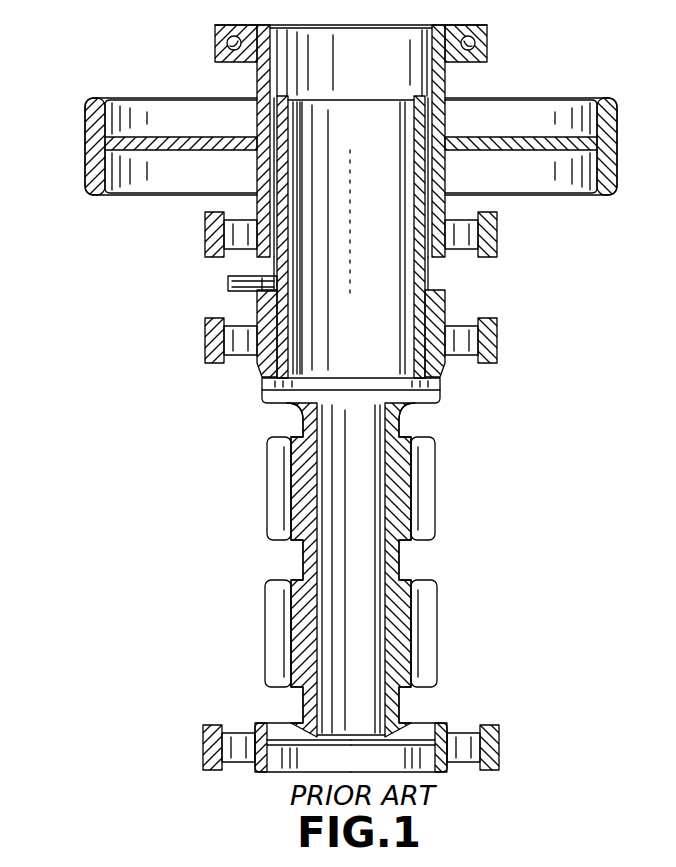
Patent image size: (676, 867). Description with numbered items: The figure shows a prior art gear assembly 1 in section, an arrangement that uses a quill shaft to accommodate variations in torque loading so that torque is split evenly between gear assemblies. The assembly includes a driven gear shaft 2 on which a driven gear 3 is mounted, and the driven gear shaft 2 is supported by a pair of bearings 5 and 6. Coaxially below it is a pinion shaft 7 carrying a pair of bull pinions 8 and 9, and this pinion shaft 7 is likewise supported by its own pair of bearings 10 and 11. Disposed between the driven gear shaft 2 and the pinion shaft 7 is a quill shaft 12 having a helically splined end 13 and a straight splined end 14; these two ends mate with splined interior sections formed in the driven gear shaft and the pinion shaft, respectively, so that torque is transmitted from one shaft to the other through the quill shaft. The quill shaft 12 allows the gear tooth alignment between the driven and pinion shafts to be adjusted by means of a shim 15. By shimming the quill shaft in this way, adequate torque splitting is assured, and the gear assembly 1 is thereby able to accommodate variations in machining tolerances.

The gear assembly 1 is at (351, 398).
The driven gear shaft 2 is at (445, 200).
The driven gear 3 is at (604, 99).
The bearing 5 is at (498, 247).
The bearing 6 is at (487, 45).
The pinion shaft 7 is at (403, 582).
The bull pinion 8 is at (430, 483).
The bull pinion 9 is at (437, 626).
The bearing 10 is at (499, 737).
The bearing 11 is at (498, 344).
The quill shaft 12 is at (421, 273).
The helically splined end 13 is at (421, 371).
The straight splined end 14 is at (420, 125).
The shim 15 is at (228, 284).